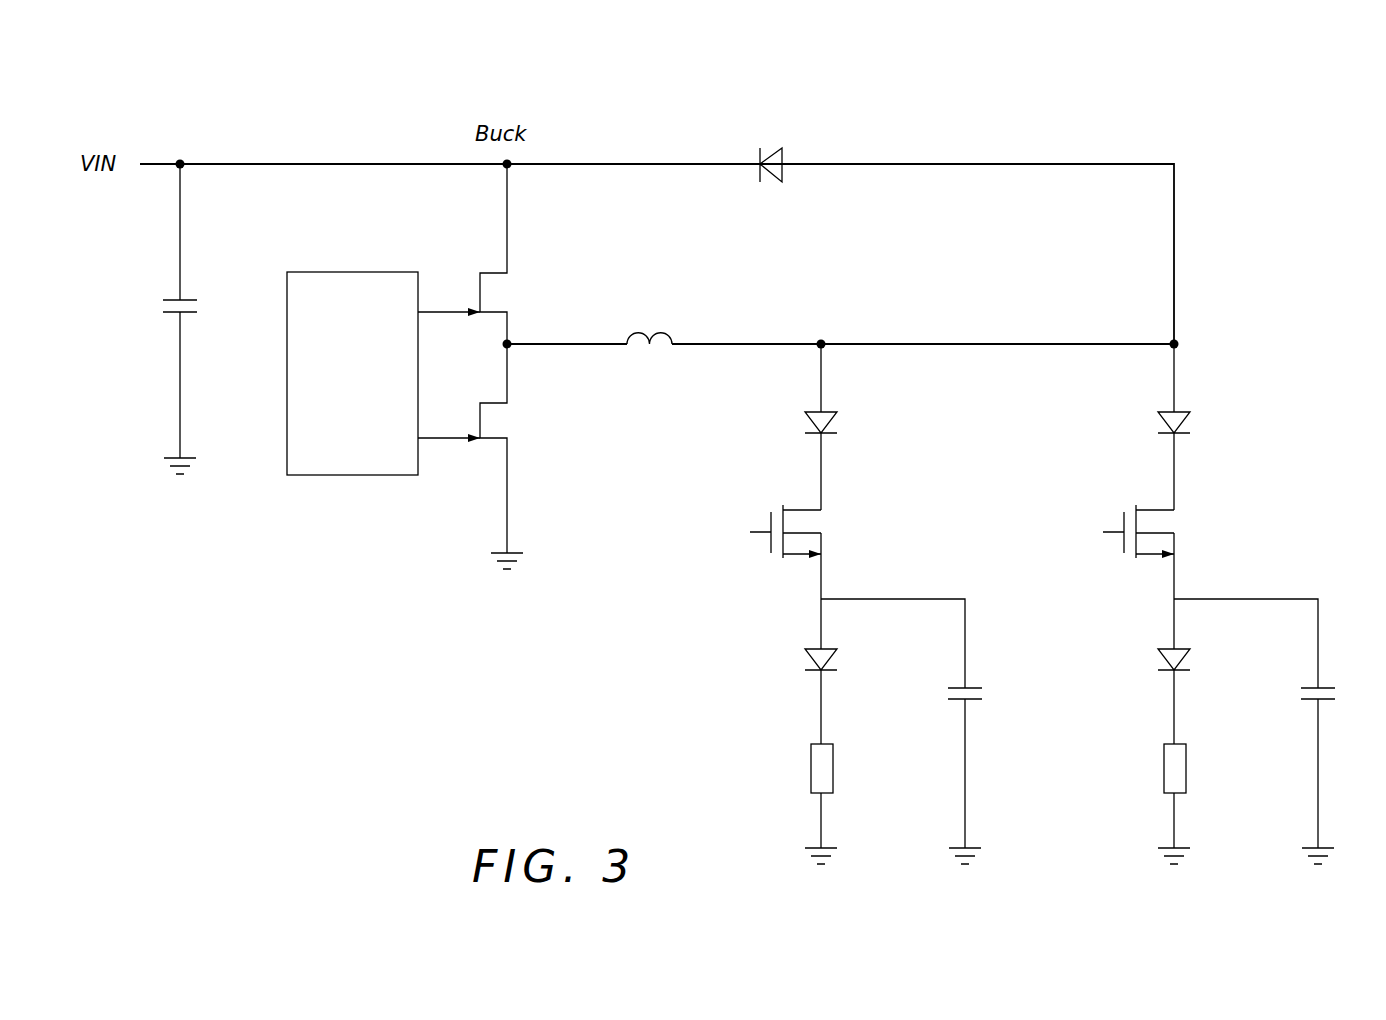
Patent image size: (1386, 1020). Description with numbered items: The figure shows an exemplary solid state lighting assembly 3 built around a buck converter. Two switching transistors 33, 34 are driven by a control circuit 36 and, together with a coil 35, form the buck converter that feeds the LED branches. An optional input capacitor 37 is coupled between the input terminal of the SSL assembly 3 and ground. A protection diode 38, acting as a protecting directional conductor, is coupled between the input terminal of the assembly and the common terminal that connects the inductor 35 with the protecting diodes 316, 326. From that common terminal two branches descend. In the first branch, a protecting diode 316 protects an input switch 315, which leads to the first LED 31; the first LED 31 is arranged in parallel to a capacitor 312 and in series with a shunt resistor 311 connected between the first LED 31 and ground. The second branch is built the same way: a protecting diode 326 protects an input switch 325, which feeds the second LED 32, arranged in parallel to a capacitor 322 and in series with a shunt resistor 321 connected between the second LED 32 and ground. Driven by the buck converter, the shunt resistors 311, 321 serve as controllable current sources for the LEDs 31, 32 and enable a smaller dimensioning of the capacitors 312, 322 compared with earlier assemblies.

The solid state lighting assembly 3 is at (922, 92).
The input capacitor 37 is at (162, 306).
The control circuit 36 is at (365, 477).
The switching transistor 33 is at (502, 292).
The switching transistor 34 is at (502, 420).
The coil 35 is at (651, 330).
The protection diode 38 is at (770, 147).
The protecting diode 316 is at (848, 418).
The input switch 315 is at (760, 524).
The first LED 31 is at (848, 657).
The shunt resistor 311 is at (811, 765).
The capacitor 312 is at (936, 694).
The protecting diode 326 is at (1201, 418).
The input switch 325 is at (1113, 524).
The second LED 32 is at (1201, 657).
The shunt resistor 321 is at (1164, 765).
The capacitor 322 is at (1289, 694).